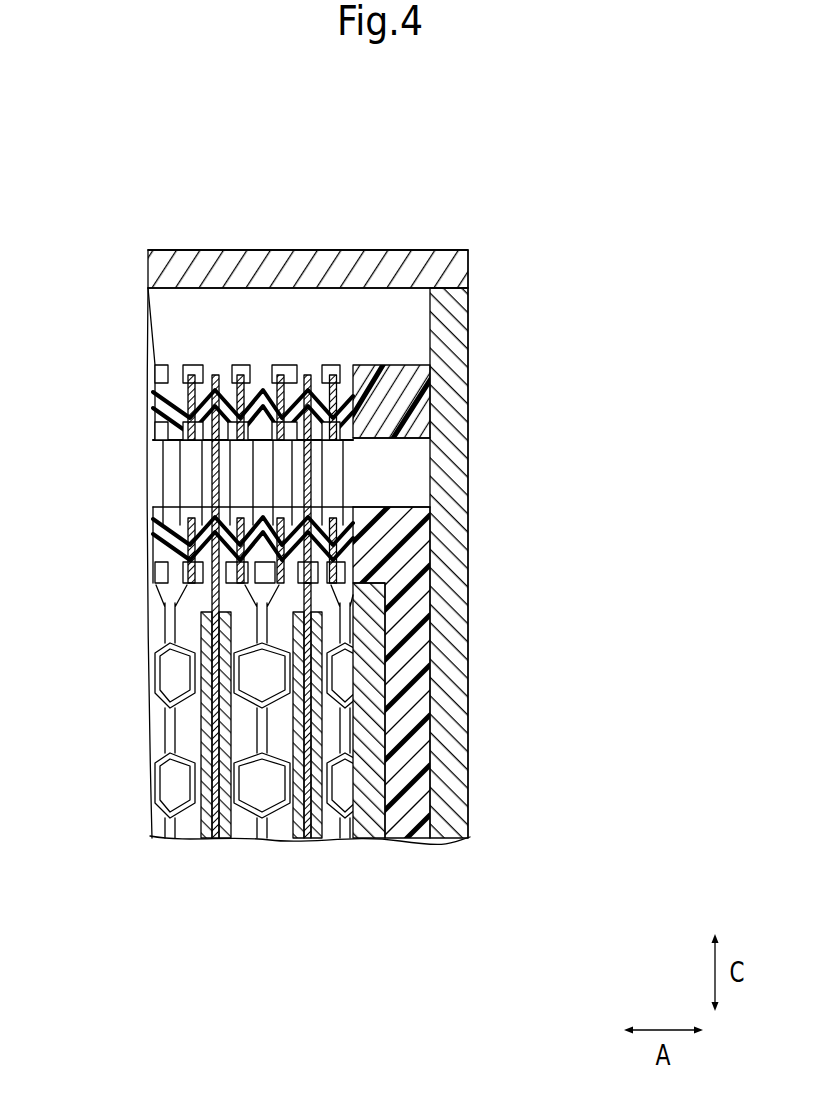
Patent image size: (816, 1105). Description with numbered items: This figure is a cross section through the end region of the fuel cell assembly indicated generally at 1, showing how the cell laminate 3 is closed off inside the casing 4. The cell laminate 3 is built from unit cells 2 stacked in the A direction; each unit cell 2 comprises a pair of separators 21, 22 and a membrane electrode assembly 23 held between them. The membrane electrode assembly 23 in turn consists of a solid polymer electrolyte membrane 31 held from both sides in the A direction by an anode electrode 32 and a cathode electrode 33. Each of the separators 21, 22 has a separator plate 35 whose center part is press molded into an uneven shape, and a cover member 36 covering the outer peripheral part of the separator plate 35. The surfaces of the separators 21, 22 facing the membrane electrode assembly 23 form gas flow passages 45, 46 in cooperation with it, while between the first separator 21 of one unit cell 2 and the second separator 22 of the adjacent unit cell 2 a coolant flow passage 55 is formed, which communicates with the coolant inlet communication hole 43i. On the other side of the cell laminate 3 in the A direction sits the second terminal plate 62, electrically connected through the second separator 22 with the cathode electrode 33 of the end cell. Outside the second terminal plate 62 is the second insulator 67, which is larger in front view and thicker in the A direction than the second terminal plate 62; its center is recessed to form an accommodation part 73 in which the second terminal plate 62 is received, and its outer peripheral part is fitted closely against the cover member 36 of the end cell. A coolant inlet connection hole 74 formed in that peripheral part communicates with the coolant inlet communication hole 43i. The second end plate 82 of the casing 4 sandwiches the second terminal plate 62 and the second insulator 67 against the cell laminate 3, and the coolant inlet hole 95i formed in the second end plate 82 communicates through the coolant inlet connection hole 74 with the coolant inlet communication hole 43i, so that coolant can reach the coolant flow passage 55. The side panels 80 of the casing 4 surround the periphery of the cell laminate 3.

The fuel cell stack 1 is at (573, 217).
The unit cell 2 is at (171, 356).
The cell laminate 3 is at (146, 373).
The casing 4 is at (161, 240).
The first separator 21 is at (282, 354).
The second separator 22 is at (322, 355).
The membrane electrode assembly 23 is at (306, 355).
The solid polymer electrolyte membrane 31 is at (308, 842).
The anode electrode 32 is at (300, 842).
The cathode electrode 33 is at (315, 842).
The separator plate 35 is at (263, 840).
The cover member 36 is at (274, 372).
The coolant inlet communication hole 43i is at (357, 453).
The gas flow passage 45 is at (276, 738).
The gas flow passage 46 is at (385, 840).
The coolant flow passage 55 is at (260, 792).
The second terminal plate 62 is at (332, 741).
The second insulator 67 is at (401, 370).
The accommodation part 73 is at (379, 583).
The coolant inlet connection hole 74 is at (419, 449).
The side panel 80 is at (346, 250).
The second end plate 82 is at (452, 801).
The coolant inlet hole 95i is at (459, 442).